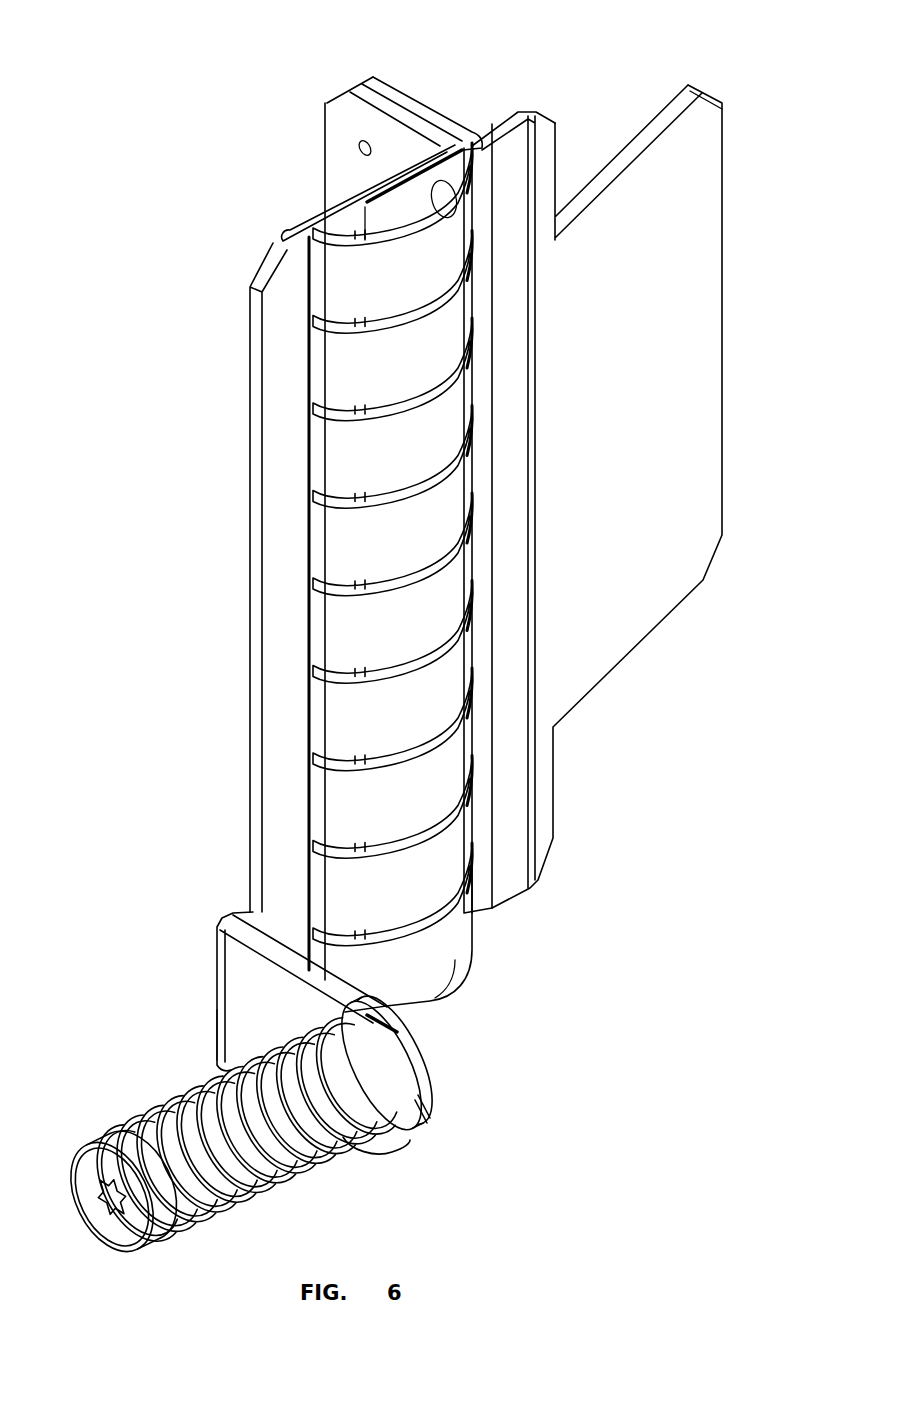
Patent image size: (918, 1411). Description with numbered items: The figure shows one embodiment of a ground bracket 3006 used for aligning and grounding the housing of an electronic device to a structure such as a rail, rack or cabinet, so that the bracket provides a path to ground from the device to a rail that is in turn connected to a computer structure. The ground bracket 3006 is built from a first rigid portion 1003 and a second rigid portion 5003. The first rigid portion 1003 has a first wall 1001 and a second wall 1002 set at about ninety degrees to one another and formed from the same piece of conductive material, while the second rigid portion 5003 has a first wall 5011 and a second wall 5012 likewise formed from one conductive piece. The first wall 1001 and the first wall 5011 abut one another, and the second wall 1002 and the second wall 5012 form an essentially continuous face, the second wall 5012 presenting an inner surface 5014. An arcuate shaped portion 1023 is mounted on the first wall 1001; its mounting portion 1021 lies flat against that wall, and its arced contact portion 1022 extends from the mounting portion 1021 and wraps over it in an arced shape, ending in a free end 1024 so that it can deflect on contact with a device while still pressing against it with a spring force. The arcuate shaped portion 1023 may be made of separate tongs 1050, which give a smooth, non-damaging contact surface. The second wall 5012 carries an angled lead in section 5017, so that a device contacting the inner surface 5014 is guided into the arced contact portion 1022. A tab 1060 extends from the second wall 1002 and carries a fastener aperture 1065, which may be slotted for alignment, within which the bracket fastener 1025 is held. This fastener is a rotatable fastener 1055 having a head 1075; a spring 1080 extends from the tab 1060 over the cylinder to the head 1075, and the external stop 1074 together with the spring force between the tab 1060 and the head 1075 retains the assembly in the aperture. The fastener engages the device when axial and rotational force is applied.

The ground bracket 3006 is at (570, 60).
The second rigid portion 5003 is at (400, 88).
The first wall 5011 is at (421, 105).
The second wall 5012 is at (495, 137).
The angled lead in section 5017 is at (620, 153).
The inner surface 5014 is at (650, 300).
The first wall 1001 is at (322, 125).
The second wall 1002 is at (258, 378).
The first rigid portion 1003 is at (318, 142).
The mounting portion 1021 is at (383, 213).
The arced contact portion 1022 is at (394, 240).
The arcuate shaped portion 1023 is at (452, 995).
The free end 1024 is at (318, 255).
The tongs 1050 is at (340, 292).
The tab 1060 is at (232, 993).
The bracket fastener 1025 is at (102, 1048).
The rotatable fastener 1055 is at (92, 1222).
The head 1075 is at (167, 1228).
The spring 1080 is at (272, 1170).
The external stop 1074 is at (430, 1003).
The fastener aperture 1065 is at (395, 1120).